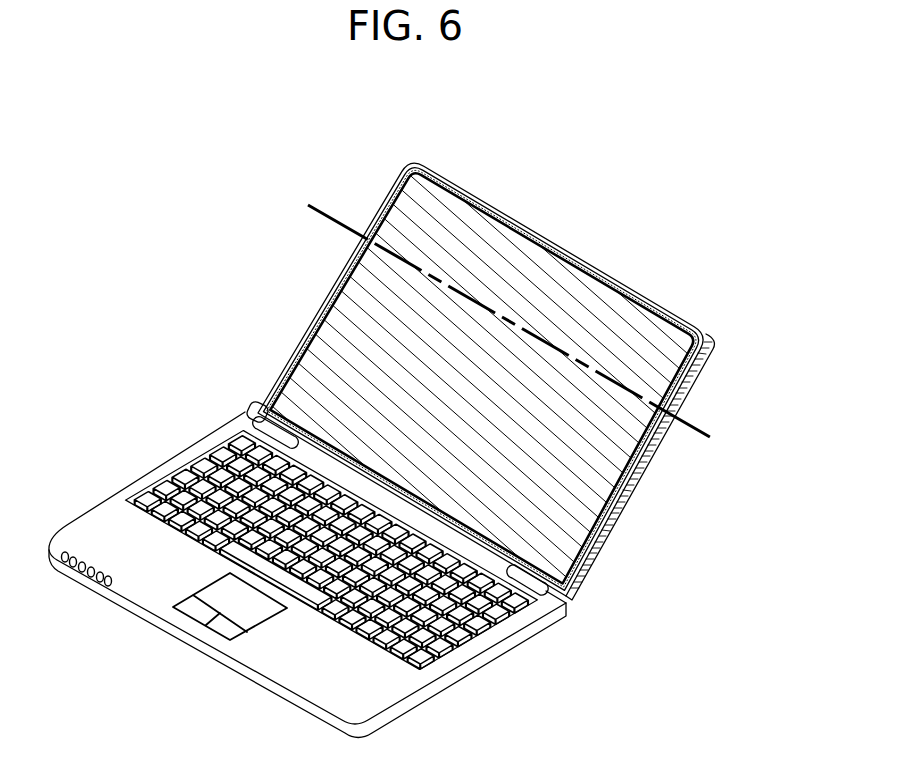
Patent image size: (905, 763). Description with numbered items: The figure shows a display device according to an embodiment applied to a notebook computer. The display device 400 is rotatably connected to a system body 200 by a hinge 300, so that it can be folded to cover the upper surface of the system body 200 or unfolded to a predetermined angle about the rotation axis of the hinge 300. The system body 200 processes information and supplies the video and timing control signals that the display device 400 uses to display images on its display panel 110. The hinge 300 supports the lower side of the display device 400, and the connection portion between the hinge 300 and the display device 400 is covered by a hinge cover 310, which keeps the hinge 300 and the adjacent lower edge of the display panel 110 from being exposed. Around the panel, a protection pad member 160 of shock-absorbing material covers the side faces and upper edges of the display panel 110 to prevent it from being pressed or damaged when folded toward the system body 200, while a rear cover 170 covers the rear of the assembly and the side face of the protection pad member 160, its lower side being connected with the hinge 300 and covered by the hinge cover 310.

The display panel 110 is at (583, 287).
The protection pad member 160 is at (653, 297).
The rear cover 170 is at (703, 376).
The system body 200 is at (149, 456).
The hinge 300 is at (266, 420).
The hinge cover 310 is at (250, 405).
The display device 400 is at (276, 311).